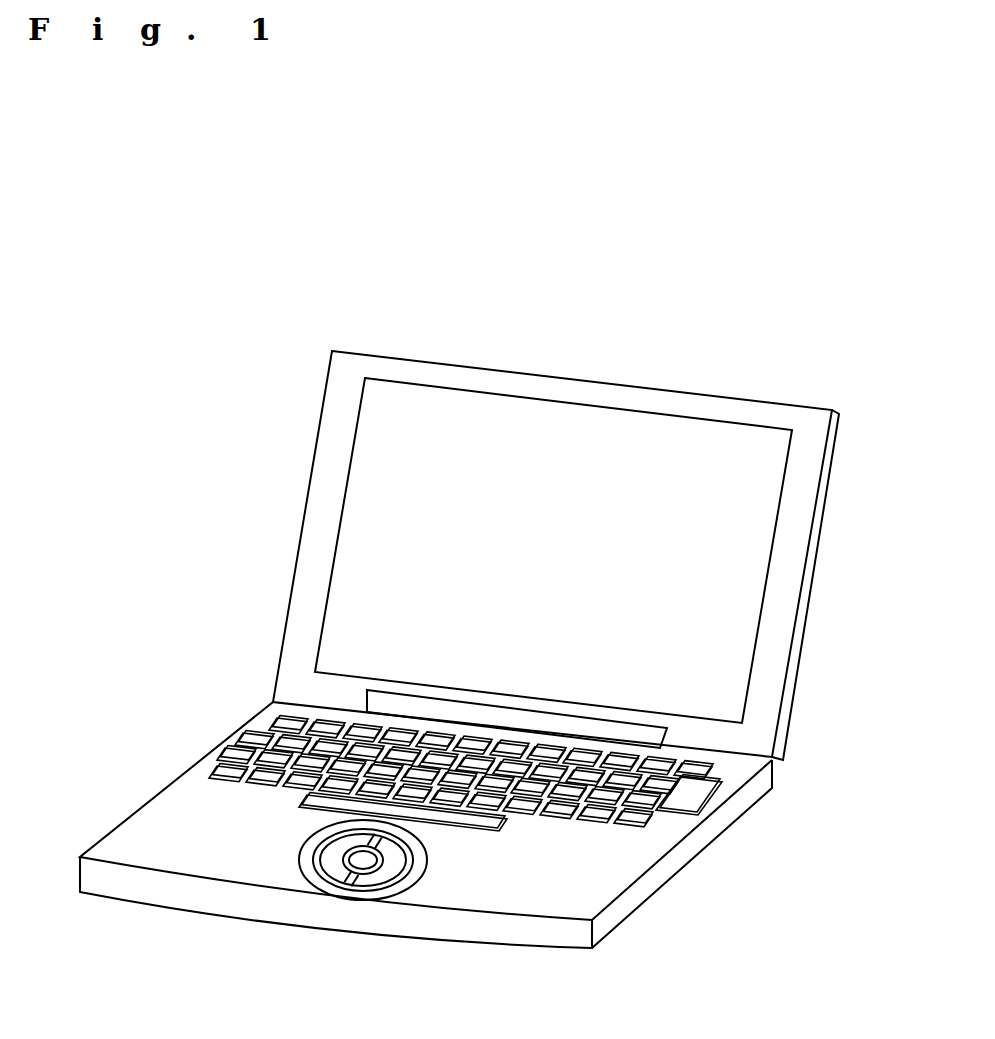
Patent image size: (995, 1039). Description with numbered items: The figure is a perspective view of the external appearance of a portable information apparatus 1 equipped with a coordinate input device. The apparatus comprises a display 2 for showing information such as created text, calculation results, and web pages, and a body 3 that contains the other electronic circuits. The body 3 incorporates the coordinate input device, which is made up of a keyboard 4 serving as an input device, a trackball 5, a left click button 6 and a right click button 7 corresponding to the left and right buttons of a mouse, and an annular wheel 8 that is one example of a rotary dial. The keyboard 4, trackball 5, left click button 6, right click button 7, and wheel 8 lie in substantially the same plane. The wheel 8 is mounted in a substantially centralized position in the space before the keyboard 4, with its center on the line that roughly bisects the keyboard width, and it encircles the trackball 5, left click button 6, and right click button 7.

The portable information apparatus 1 is at (237, 722).
The display 2 is at (348, 467).
The body 3 is at (640, 905).
The keyboard 4 is at (670, 822).
The trackball 5 is at (345, 867).
The left click button 6 is at (320, 862).
The right click button 7 is at (393, 883).
The wheel 8 is at (422, 877).